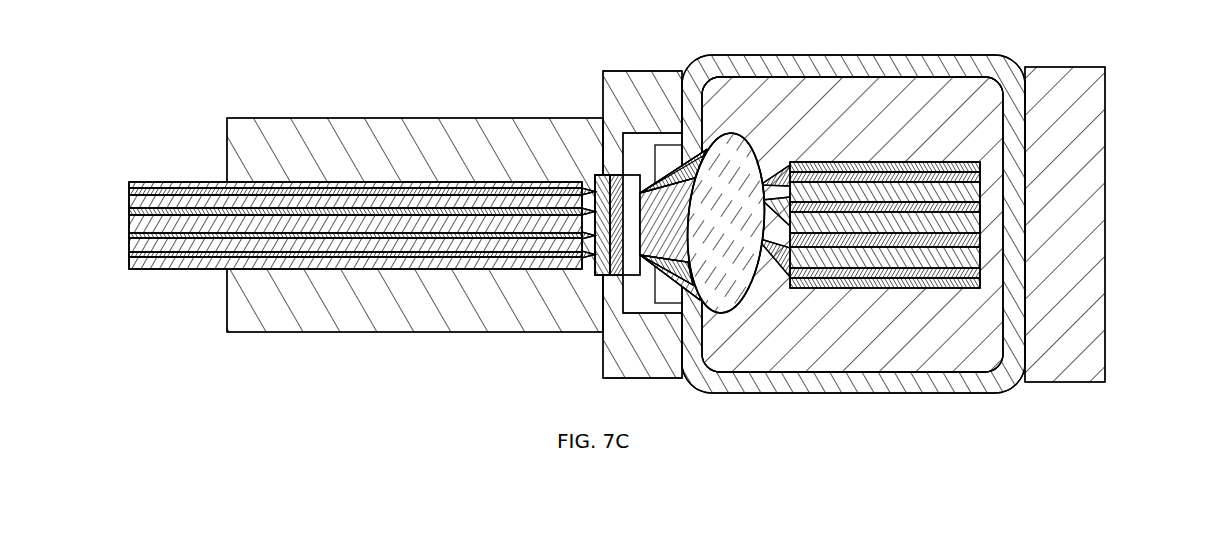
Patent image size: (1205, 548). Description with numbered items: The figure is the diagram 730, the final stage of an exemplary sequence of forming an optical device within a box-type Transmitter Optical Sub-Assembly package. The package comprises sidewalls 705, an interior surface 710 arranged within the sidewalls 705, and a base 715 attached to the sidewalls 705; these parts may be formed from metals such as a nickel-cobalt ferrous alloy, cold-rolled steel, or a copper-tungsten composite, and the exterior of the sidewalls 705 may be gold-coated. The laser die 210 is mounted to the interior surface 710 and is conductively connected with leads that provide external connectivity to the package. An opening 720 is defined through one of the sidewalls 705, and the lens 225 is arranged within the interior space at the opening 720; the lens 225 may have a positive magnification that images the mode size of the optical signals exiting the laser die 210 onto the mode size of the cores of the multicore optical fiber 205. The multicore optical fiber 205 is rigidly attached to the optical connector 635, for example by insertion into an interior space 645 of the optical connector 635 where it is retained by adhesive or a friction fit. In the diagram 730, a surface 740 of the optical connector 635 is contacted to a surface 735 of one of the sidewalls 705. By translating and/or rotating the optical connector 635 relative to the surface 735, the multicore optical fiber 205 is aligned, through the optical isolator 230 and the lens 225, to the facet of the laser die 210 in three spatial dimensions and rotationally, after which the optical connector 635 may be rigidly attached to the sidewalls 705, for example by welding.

The multicore optical fiber 205 is at (153, 181).
The optical connector 635 is at (343, 117).
The optical isolator 230 is at (622, 172).
The interior space 645 is at (595, 262).
The opening 720 is at (657, 163).
The lens 225 is at (707, 142).
The laser die 210 is at (835, 162).
The sidewalls 705 is at (885, 57).
The interior surface 710 is at (960, 95).
The base 715 is at (1105, 183).
The diagram 730 is at (1121, 38).
The surface 735 is at (690, 328).
The surface 740 is at (688, 386).